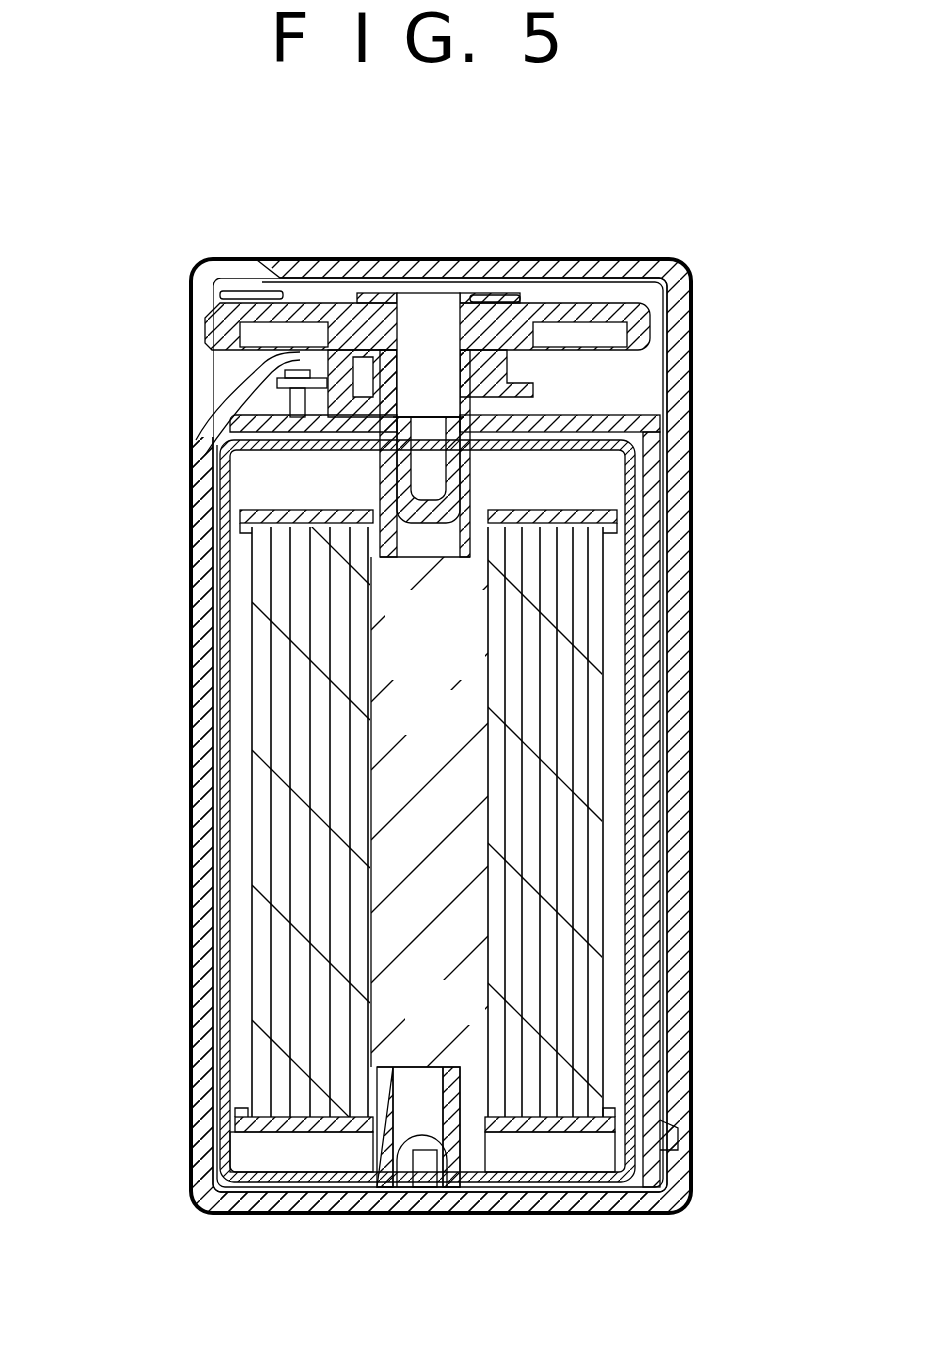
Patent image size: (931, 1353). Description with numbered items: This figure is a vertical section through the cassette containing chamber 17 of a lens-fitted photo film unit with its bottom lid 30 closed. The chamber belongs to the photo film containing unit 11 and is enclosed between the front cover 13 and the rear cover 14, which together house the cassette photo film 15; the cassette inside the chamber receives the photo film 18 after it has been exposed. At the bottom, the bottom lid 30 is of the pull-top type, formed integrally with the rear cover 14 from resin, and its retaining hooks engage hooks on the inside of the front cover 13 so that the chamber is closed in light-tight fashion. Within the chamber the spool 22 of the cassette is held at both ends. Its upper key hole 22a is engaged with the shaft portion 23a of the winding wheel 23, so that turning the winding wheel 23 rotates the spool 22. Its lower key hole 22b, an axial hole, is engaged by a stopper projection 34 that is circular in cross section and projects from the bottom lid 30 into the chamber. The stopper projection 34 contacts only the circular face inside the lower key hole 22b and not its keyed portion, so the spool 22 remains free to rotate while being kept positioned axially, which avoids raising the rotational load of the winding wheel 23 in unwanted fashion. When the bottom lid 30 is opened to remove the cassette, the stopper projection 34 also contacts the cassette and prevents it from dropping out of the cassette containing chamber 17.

The photo film containing unit 11 is at (564, 423).
The front cover 13 is at (686, 398).
The rear cover 14 is at (208, 683).
The cassette photo film 15 is at (224, 822).
The cassette containing chamber 17 is at (640, 683).
The photo film 18 is at (262, 578).
The spool 22 is at (453, 734).
The upper key hole 22a is at (466, 548).
The lower key hole 22b is at (443, 1067).
The winding wheel 23 is at (585, 305).
The shaft portion 23a is at (434, 522).
The bottom lid 30 is at (522, 1196).
The stopper projection 34 is at (447, 1162).